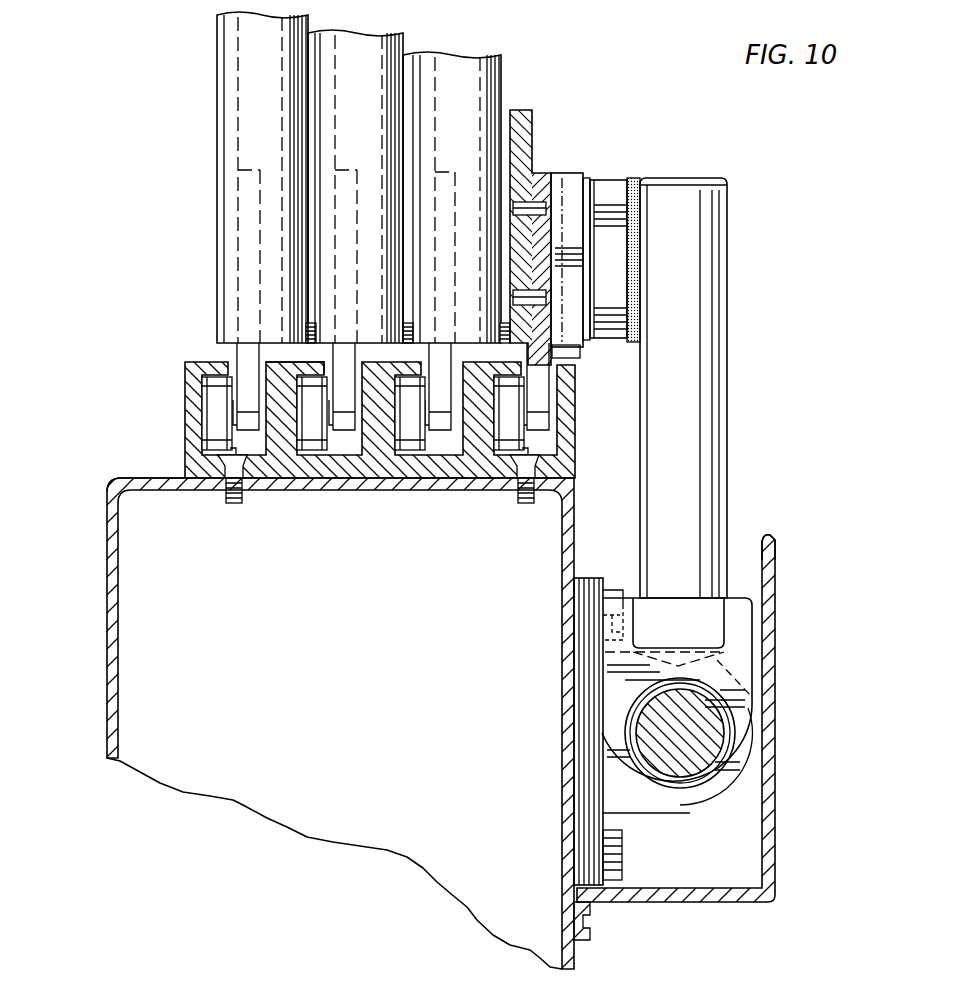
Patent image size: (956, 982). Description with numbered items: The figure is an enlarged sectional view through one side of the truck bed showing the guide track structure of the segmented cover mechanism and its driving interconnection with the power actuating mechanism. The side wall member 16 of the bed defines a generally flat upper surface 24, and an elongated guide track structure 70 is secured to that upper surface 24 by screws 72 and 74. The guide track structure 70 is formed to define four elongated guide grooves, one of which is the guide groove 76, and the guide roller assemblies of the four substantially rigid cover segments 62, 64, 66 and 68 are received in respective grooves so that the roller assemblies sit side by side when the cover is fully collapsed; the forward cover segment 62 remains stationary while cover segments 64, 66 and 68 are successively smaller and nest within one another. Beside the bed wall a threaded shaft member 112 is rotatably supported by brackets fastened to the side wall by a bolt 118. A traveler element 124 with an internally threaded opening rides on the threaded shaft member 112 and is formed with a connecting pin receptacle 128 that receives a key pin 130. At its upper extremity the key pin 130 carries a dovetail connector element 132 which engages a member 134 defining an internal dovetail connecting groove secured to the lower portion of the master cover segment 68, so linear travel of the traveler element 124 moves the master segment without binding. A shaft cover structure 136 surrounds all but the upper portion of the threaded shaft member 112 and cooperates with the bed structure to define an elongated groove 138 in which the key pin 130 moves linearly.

The side wall member 16 is at (107, 607).
The upper surface 24 is at (143, 478).
The forward cover segment 62 is at (228, 70).
The cover segment 64 is at (388, 48).
The cover segment 66 is at (498, 65).
The master cover segment 68 is at (532, 132).
The guide track structure 70 is at (378, 462).
The screw 72 is at (230, 505).
The screw 74 is at (516, 505).
The guide groove 76 is at (292, 453).
The threaded shaft member 112 is at (707, 730).
The bolt 118 is at (622, 858).
The traveler element 124 is at (740, 657).
The connecting pin receptacle 128 is at (723, 618).
The key pin 130 is at (725, 400).
The dovetail connector element 132 is at (613, 190).
The internal dovetail connecting groove member 134 is at (558, 173).
The shaft cover structure 136 is at (777, 813).
The elongated groove 138 is at (742, 535).